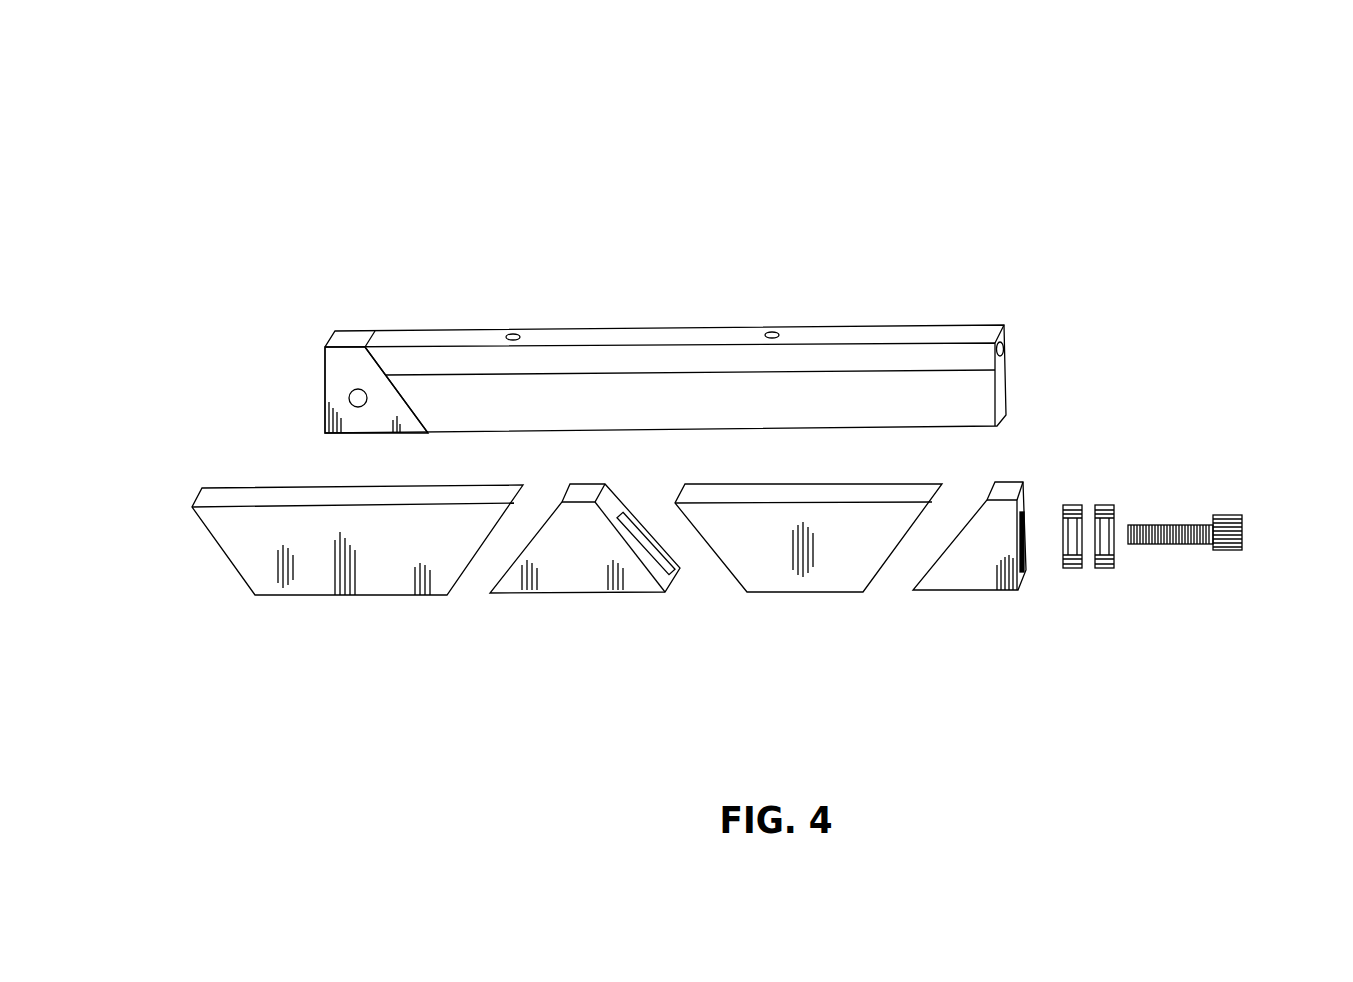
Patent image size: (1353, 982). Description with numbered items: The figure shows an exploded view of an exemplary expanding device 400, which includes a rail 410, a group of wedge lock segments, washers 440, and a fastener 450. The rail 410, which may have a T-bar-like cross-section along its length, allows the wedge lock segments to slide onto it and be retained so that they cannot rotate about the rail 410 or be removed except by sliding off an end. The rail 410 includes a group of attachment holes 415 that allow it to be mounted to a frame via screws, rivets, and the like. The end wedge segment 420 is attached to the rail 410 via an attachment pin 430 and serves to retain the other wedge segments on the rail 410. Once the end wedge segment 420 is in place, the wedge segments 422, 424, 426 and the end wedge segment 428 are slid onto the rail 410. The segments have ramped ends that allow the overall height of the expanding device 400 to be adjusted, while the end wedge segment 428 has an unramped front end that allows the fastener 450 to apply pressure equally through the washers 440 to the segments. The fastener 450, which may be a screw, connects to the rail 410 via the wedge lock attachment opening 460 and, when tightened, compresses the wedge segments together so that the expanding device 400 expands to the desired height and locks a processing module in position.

The expanding device 400 is at (388, 149).
The rail 410 is at (948, 312).
The attachment holes 415 is at (515, 317).
The end wedge segment 420 is at (312, 394).
The wedge segment 422 is at (355, 609).
The wedge segment 424 is at (585, 609).
The wedge segment 426 is at (808, 609).
The end wedge segment 428 is at (952, 609).
The attachment pin 430 is at (347, 376).
The washers 440 is at (1075, 494).
The fastener 450 is at (1217, 561).
The wedge lock attachment opening 460 is at (1019, 348).